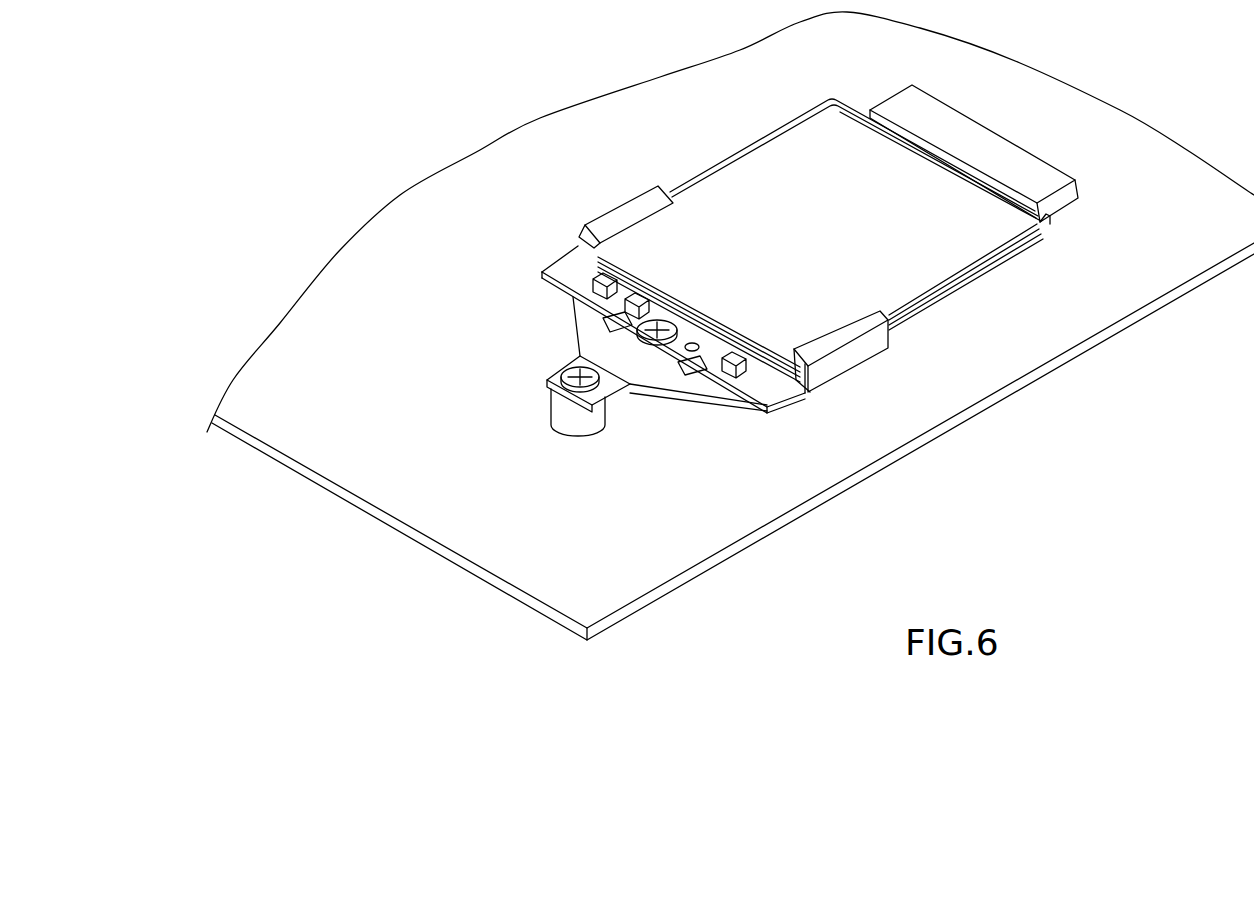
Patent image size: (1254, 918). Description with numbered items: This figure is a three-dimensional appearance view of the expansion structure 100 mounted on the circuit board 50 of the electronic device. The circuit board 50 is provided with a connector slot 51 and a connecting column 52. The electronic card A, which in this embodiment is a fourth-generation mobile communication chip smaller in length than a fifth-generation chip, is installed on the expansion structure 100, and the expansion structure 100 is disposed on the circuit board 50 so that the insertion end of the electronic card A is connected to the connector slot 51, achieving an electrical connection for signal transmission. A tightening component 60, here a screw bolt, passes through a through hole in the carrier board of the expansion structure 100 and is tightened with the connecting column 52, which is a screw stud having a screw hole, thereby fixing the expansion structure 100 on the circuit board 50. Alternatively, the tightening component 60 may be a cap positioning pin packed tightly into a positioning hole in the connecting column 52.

The electronic card A is at (728, 150).
The circuit board 50 is at (768, 495).
The connector slot 51 is at (988, 142).
The connecting column 52 is at (563, 417).
The tightening component 60 is at (558, 372).
The expansion structure 100 is at (567, 323).